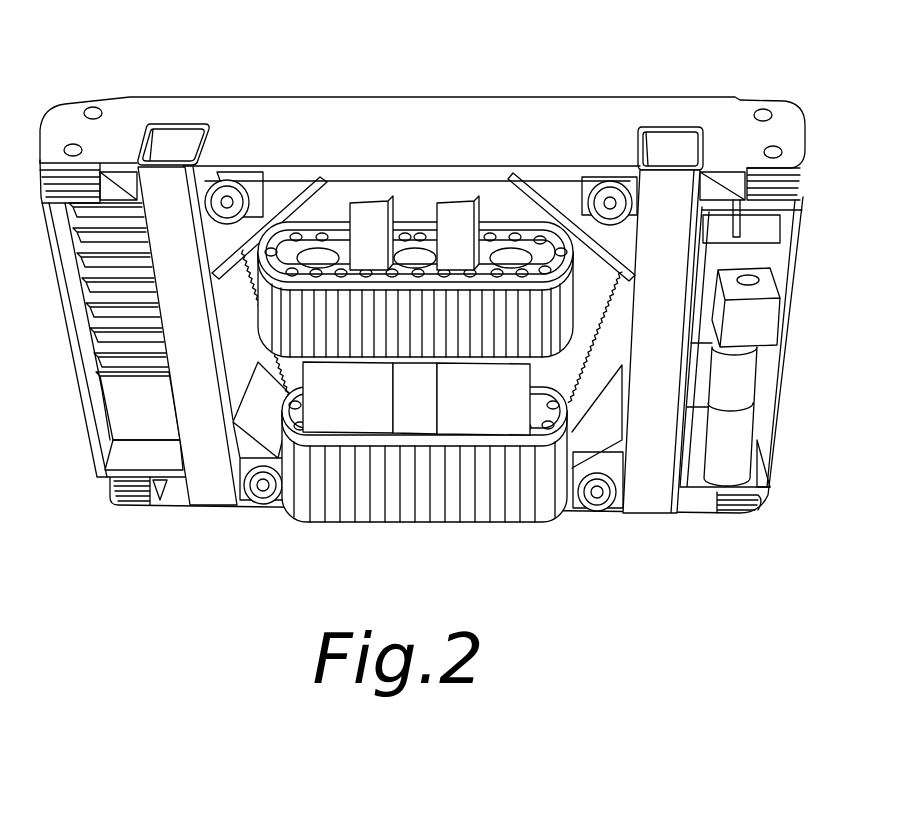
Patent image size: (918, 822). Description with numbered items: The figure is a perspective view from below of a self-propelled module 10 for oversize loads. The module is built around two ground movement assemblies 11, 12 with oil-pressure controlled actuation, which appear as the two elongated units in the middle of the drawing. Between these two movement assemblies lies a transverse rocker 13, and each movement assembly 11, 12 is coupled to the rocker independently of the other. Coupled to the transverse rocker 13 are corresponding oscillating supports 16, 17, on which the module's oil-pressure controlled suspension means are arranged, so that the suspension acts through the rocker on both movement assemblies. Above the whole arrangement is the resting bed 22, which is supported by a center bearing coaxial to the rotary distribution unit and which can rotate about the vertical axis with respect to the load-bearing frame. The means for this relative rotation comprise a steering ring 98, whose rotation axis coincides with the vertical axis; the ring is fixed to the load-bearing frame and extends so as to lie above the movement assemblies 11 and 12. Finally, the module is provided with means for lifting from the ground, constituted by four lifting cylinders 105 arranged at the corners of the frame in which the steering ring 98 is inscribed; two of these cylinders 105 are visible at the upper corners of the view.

The self-propelled module 10 is at (622, 91).
The resting bed 22 is at (283, 97).
The lifting cylinders 105 is at (267, 180).
The ground movement assembly 11 is at (497, 213).
The steering ring 98 is at (593, 293).
The ground movement assembly 12 is at (348, 525).
The oscillating support 16 is at (352, 398).
The transverse rocker 13 is at (446, 400).
The oscillating support 17 is at (507, 398).